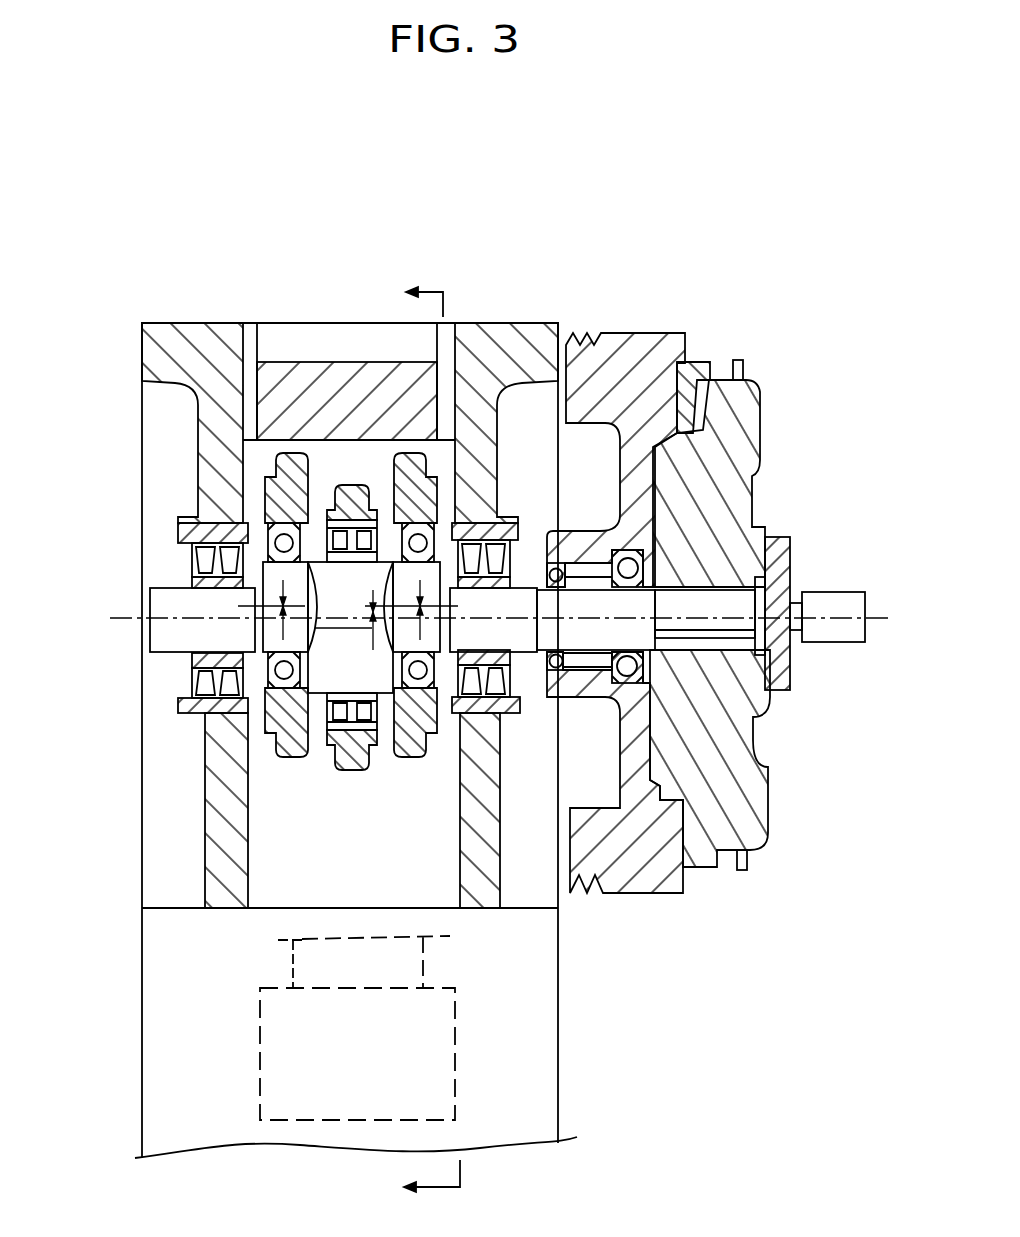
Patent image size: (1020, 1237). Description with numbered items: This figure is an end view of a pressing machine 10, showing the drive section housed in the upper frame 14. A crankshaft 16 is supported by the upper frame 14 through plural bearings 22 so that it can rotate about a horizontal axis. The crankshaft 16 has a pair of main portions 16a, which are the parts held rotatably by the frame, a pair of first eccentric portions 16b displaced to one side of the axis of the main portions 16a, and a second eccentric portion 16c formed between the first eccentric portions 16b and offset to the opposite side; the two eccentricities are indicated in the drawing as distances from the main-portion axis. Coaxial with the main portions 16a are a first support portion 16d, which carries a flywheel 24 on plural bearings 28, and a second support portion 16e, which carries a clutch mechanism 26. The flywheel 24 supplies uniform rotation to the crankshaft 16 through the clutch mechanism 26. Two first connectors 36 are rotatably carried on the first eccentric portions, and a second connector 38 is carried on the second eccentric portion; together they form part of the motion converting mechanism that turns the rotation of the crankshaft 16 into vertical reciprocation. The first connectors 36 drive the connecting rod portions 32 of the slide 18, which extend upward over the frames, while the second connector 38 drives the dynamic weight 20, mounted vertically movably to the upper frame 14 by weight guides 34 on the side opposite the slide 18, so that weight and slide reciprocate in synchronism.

The pressing machine 10 is at (618, 326).
The upper frame 14 is at (142, 342).
The crankshaft 16 is at (150, 596).
The main portions 16a is at (150, 652).
The first eccentric portions 16b is at (268, 583).
The second eccentric portion 16c is at (338, 675).
The first support portion 16d is at (755, 747).
The second support portion 16e is at (770, 690).
The slide 18 is at (262, 1070).
The dynamic weight 20 is at (290, 372).
The bearings 22 is at (200, 685).
The flywheel 24 is at (665, 345).
The clutch mechanism 26 is at (774, 404).
The bearings 28 is at (612, 553).
The connecting rod portions 32 is at (290, 967).
The weight guides 34 is at (250, 328).
The first connectors 36 is at (277, 472).
The second connector 38 is at (352, 485).